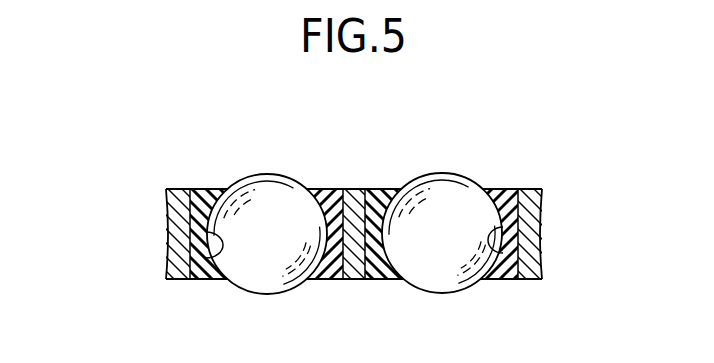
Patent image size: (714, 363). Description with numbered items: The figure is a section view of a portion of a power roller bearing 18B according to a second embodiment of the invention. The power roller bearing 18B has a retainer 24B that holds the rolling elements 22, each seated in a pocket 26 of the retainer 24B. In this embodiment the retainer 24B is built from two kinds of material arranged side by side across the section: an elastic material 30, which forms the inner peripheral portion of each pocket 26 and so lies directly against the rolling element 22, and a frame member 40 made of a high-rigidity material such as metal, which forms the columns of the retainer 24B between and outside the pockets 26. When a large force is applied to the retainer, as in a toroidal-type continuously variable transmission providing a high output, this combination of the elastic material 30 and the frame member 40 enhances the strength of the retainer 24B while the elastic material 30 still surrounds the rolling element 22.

The power roller bearing 18B is at (474, 160).
The rolling ball 22 is at (281, 208).
The retainer 24B is at (171, 189).
The pocket 26 is at (212, 252).
The elastic material 30 is at (197, 189).
The frame member 40 is at (353, 196).